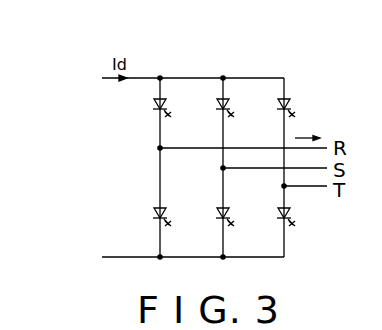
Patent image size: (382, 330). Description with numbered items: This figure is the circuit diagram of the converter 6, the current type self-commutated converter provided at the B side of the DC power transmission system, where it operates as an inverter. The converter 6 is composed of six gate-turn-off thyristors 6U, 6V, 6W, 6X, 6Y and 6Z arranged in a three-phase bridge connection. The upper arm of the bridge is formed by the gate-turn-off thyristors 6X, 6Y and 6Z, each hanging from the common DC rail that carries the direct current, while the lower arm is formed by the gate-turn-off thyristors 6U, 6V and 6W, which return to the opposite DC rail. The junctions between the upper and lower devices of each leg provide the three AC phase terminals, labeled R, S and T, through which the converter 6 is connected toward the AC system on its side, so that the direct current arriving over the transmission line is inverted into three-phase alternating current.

The converter 6 is at (104, 138).
The gate-turn-off thyristor 6X is at (171, 91).
The gate-turn-off thyristor 6Y is at (234, 91).
The gate-turn-off thyristor 6Z is at (295, 91).
The gate-turn-off thyristor 6U is at (171, 200).
The gate-turn-off thyristor 6V is at (234, 200).
The gate-turn-off thyristor 6W is at (295, 200).